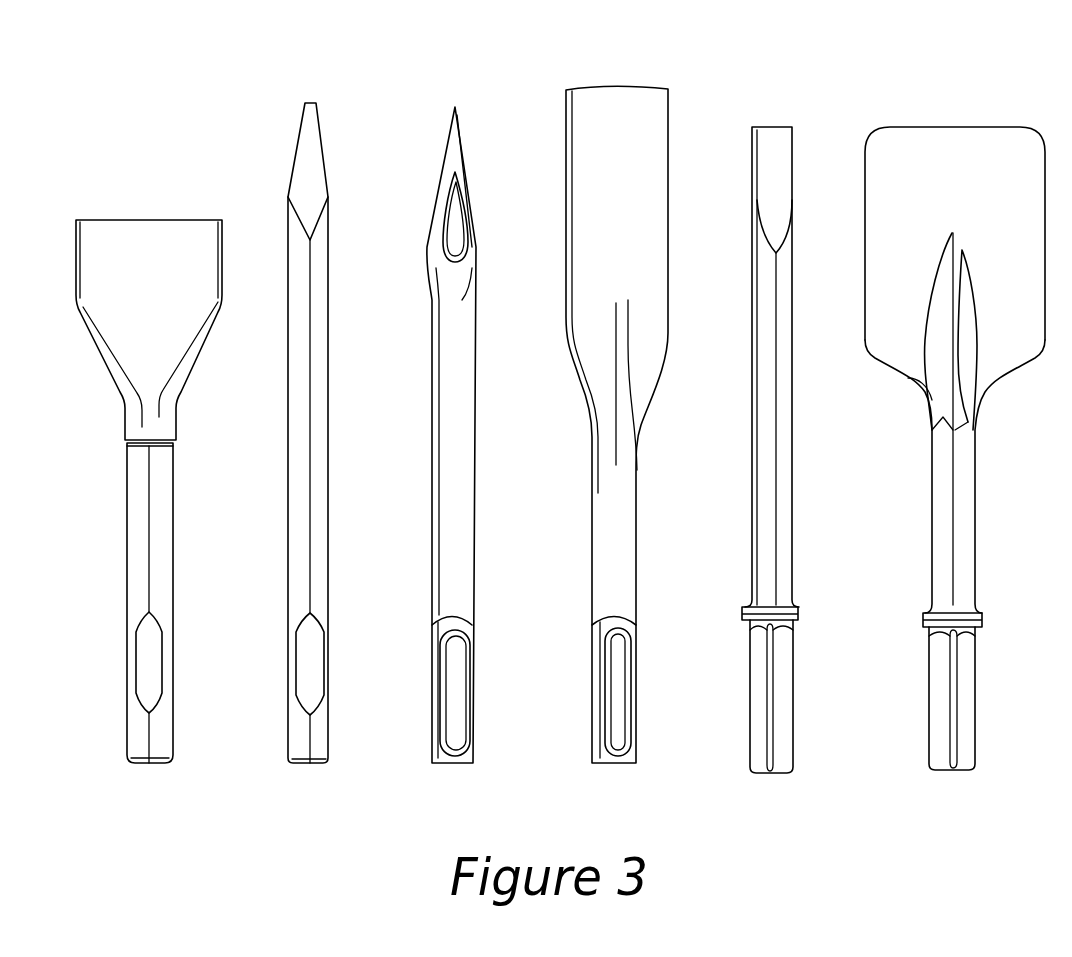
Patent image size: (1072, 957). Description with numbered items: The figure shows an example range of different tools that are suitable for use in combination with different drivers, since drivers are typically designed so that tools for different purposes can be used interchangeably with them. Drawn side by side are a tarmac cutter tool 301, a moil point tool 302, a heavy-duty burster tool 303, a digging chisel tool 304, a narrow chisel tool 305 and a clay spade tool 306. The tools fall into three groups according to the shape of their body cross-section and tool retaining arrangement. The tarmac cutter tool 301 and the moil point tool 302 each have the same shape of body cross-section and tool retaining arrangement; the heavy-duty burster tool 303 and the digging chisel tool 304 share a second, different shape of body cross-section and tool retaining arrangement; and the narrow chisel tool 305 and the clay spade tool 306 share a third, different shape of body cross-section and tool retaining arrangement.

The tarmac cutter tool 301 is at (128, 250).
The moil point tool 302 is at (313, 197).
The heavy-duty burster tool 303 is at (453, 175).
The digging chisel tool 304 is at (592, 195).
The narrow chisel tool 305 is at (776, 150).
The clay spade tool 306 is at (953, 147).